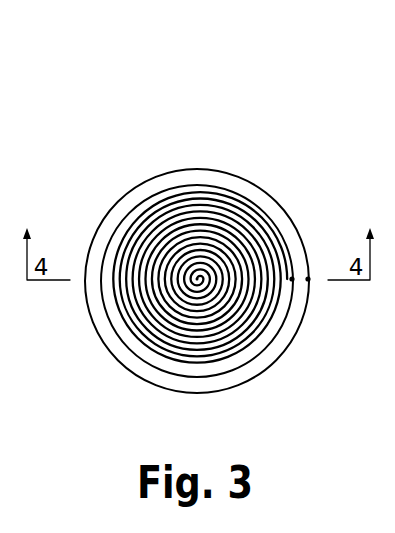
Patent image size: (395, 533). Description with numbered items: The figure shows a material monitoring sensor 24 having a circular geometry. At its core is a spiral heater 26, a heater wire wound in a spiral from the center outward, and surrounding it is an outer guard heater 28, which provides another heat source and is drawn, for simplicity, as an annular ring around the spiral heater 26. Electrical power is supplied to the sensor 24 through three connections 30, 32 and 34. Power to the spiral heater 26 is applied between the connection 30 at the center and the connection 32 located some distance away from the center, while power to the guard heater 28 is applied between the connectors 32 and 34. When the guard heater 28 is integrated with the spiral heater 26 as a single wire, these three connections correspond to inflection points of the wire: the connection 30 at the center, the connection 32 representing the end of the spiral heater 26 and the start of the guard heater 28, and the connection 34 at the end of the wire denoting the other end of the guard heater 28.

The sensor 24 is at (195, 105).
The spiral heater 26 is at (180, 193).
The guard heater 28 is at (118, 202).
The connection 30 is at (197, 278).
The connection 32 is at (292, 279).
The connection 34 is at (310, 282).